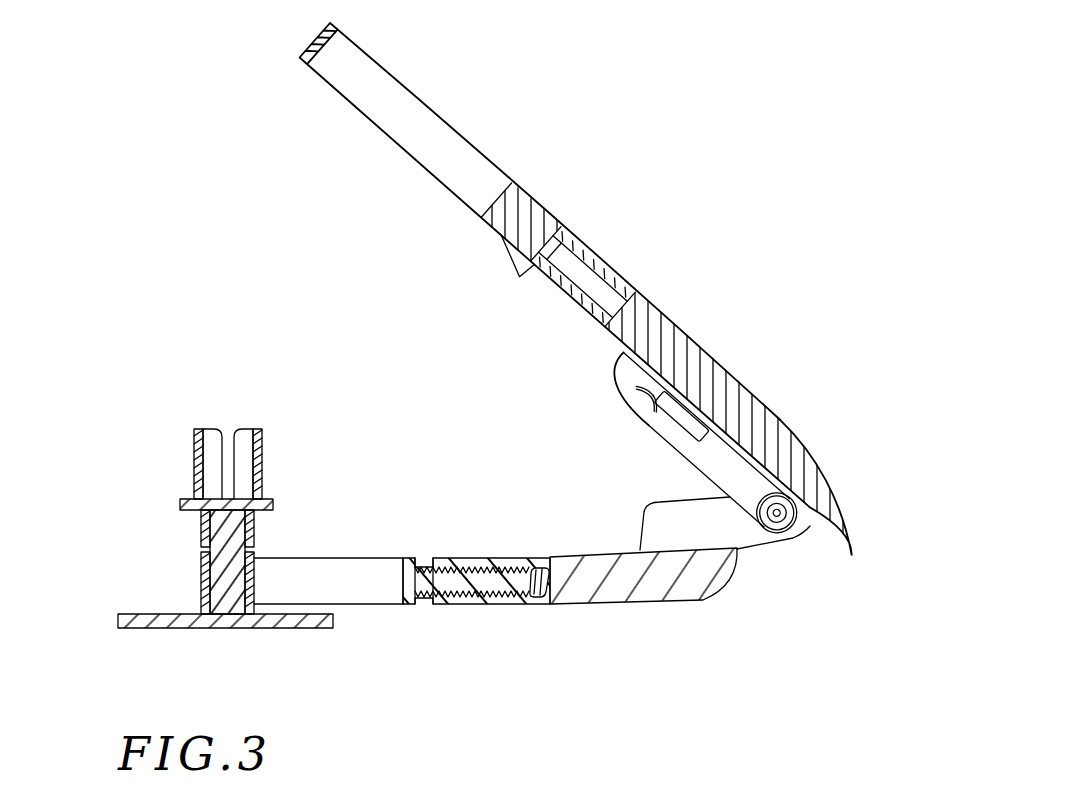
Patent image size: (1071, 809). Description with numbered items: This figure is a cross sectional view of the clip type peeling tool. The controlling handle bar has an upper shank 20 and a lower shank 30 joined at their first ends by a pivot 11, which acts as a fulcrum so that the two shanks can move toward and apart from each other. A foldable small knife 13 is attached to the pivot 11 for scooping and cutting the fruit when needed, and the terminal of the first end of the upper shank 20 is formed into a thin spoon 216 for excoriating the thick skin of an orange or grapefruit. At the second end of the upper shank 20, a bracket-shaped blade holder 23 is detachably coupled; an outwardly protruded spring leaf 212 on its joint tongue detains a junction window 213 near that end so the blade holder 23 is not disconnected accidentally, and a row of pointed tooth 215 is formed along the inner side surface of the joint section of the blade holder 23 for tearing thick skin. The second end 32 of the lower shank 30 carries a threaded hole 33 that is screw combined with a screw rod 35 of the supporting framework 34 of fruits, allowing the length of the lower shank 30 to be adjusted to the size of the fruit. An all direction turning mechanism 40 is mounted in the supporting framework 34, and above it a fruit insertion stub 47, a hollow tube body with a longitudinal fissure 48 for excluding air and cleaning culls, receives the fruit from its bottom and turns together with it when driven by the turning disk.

The pivot 11 is at (800, 522).
The foldable small knife 13 is at (633, 374).
The upper shank 20 is at (747, 387).
The blade holder 23 is at (447, 123).
The spring leaf 212 is at (598, 262).
The junction window 213 is at (618, 272).
The pointed tooth 215 is at (514, 257).
The thin spoon 216 is at (852, 527).
The lower shank 30 is at (590, 552).
The second end of the lower shank 32 is at (450, 560).
The threaded hole 33 is at (523, 594).
The supporting framework 34 is at (348, 590).
The screw rod 35 is at (452, 583).
The all direction turning mechanism 40 is at (165, 448).
The fruit insertion stub 47 is at (257, 453).
The longitudinal fissure 48 is at (227, 445).